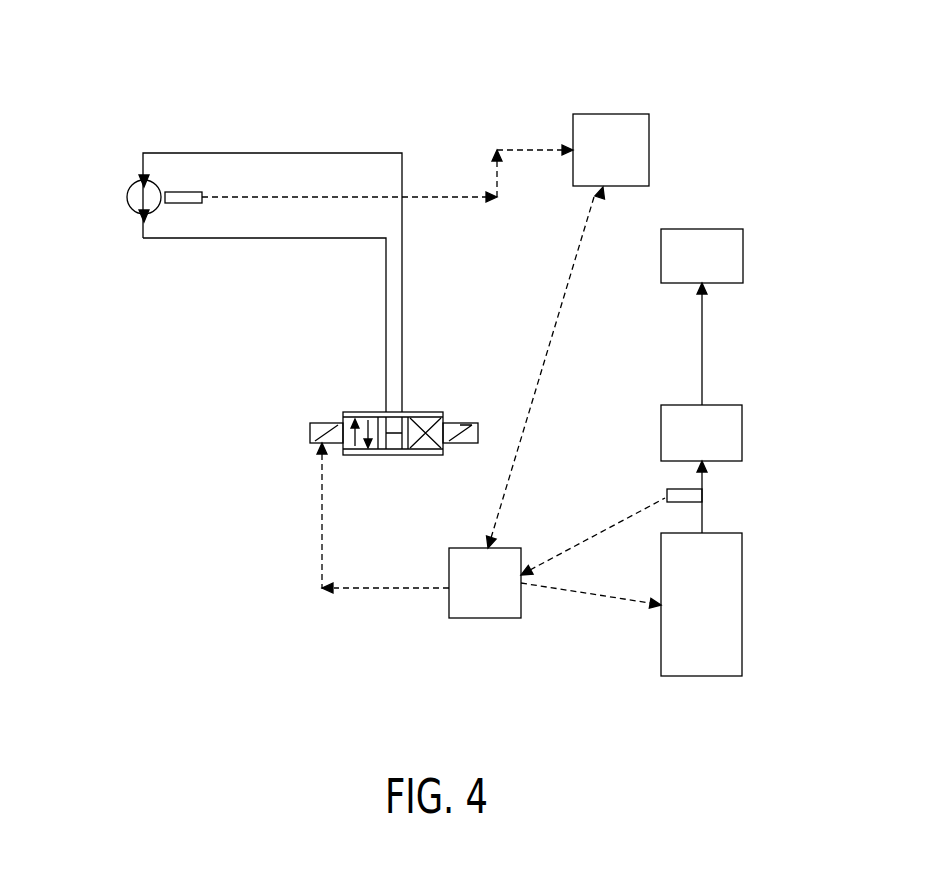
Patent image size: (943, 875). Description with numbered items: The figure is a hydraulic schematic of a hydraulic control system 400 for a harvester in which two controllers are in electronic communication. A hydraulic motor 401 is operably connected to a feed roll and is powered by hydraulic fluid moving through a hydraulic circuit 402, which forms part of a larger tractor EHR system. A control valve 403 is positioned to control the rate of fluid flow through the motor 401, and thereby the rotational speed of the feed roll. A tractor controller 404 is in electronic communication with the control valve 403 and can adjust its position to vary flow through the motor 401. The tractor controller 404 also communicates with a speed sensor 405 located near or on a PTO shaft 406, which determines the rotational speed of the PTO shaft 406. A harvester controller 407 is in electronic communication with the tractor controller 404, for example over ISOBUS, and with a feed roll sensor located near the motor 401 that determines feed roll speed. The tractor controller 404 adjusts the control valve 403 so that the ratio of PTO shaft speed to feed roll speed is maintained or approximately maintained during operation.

The hydraulic control system 400 is at (476, 86).
The hydraulic motor 401 is at (127, 197).
The hydraulic circuit 402 is at (300, 152).
The control valve 403 is at (343, 423).
The tractor controller 404 is at (470, 620).
The speed sensor 405 is at (667, 490).
The PTO shaft 406 is at (744, 430).
The harvester controller 407 is at (652, 128).